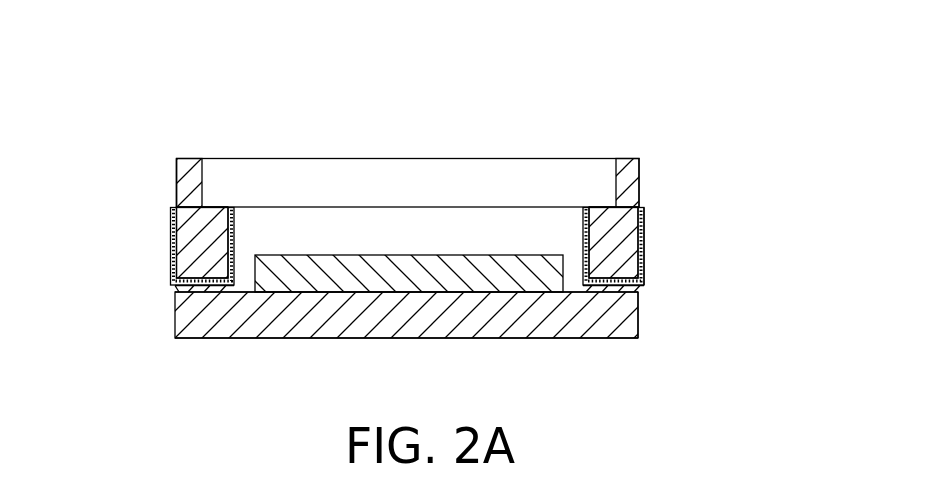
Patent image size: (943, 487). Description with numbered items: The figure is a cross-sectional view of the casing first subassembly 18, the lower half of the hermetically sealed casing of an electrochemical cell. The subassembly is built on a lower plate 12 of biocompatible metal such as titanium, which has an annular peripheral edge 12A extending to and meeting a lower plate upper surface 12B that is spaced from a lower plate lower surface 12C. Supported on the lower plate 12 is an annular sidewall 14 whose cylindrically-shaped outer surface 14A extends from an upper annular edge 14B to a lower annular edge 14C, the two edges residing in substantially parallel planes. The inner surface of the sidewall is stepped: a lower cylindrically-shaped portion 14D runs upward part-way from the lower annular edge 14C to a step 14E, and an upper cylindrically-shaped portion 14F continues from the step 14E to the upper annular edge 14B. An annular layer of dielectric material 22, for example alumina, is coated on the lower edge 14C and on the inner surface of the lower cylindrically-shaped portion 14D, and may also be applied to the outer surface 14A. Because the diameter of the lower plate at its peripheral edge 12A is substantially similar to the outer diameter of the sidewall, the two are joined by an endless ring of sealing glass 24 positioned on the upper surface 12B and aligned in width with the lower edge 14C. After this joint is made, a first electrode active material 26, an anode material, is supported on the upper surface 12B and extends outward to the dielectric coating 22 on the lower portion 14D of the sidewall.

The casing first subassembly 18 is at (669, 88).
The lower plate 12 is at (203, 318).
The annular peripheral edge 12A is at (640, 327).
The lower plate upper surface 12B is at (634, 316).
The lower plate lower surface 12C is at (610, 340).
The annular sidewall 14 is at (179, 228).
The cylindrically-shaped outer surface 14A is at (642, 173).
The upper annular edge 14B is at (194, 165).
The lower annular edge 14C is at (624, 263).
The lower cylindrically-shaped portion 14D is at (607, 227).
The step 14E is at (603, 208).
The upper cylindrically-shaped portion 14F is at (192, 185).
The dielectric material layer 22 is at (203, 243).
The sealing glass 24 is at (190, 288).
The first electrode active material 26 is at (308, 275).